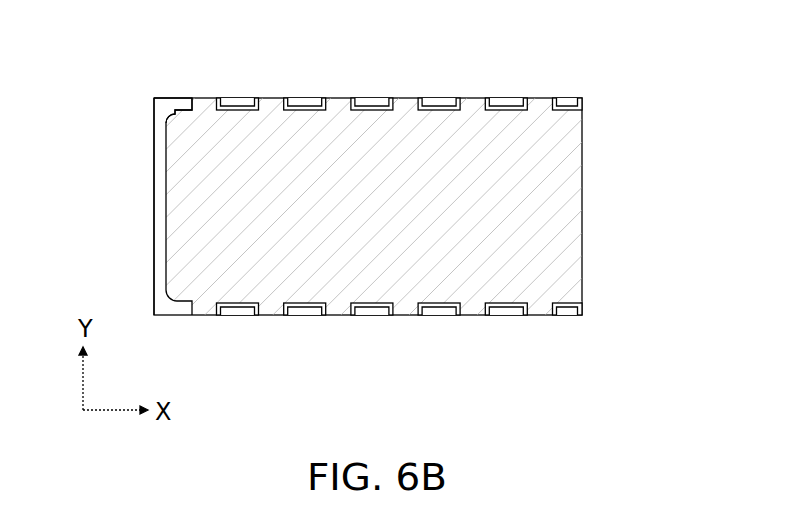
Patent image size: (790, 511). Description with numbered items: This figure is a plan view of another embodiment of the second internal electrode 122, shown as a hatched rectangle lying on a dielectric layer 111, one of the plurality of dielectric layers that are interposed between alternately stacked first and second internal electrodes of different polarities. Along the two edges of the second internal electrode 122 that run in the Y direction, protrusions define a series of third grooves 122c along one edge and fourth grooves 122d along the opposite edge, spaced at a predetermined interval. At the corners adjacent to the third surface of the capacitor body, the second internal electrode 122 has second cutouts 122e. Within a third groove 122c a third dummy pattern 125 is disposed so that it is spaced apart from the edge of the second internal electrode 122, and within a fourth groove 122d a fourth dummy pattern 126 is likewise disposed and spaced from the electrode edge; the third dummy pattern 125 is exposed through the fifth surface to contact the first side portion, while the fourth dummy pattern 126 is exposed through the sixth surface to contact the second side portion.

The dielectric layer 111 is at (155, 206).
The second internal electrode 122 is at (583, 205).
The third groove 122c is at (503, 317).
The fourth groove 122d is at (505, 97).
The second cutout 122e is at (160, 98).
The third dummy pattern 125 is at (372, 317).
The fourth dummy pattern 126 is at (373, 97).